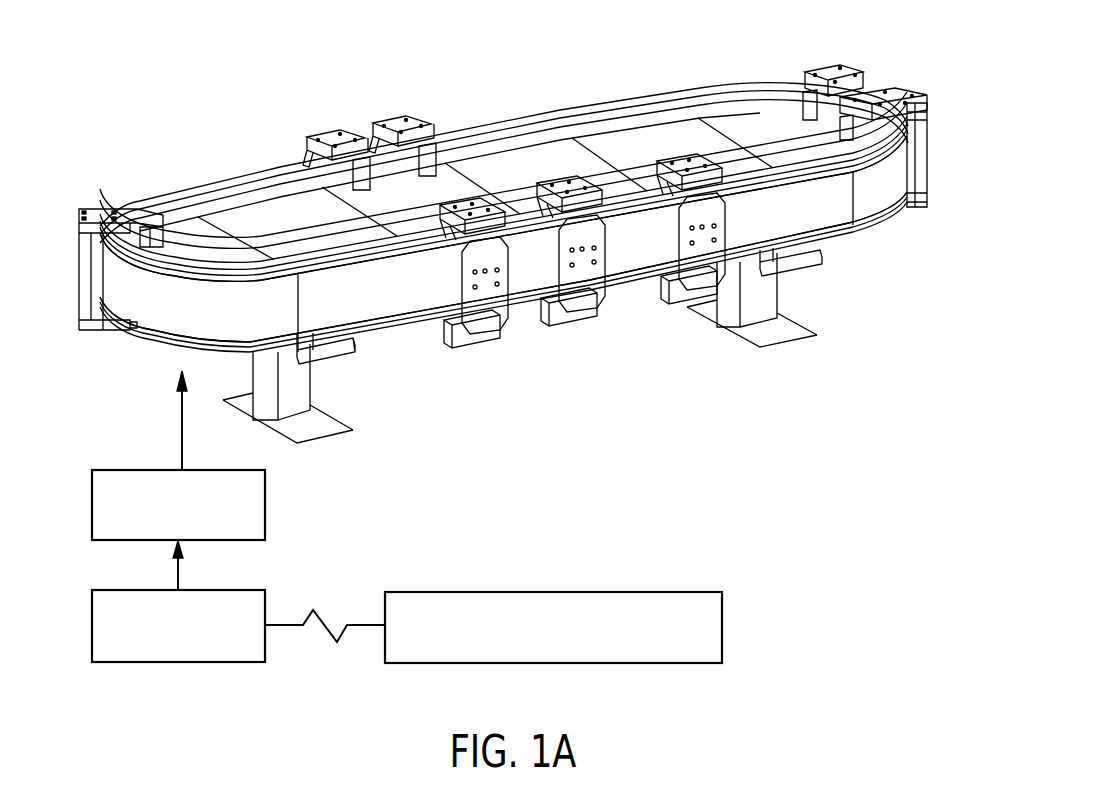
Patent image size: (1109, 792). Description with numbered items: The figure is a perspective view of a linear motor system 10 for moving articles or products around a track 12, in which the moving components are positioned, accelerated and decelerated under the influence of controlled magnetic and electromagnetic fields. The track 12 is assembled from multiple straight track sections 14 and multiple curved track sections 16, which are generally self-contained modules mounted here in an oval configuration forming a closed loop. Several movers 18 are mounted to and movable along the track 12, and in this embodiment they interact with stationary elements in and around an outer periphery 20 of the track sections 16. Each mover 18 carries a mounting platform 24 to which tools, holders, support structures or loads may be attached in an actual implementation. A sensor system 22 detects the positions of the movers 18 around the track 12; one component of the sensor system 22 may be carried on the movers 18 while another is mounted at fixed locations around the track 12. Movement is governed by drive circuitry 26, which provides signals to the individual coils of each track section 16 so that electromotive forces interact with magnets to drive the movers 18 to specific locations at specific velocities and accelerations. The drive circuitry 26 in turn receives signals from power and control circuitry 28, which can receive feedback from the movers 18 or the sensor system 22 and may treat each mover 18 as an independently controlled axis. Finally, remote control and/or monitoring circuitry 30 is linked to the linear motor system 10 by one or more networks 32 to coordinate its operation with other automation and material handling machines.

The linear motor system 10 is at (848, 35).
The track 12 is at (237, 307).
The straight track sections 14 is at (432, 283).
The curved track sections 16 is at (160, 312).
The movers 18 is at (397, 132).
The outer periphery 20 is at (353, 302).
The sensor system 22 is at (795, 103).
The mounting platform 24 is at (497, 321).
The drive circuitry 26 is at (265, 503).
The power and control circuitry 28 is at (267, 607).
The remote control and/or monitoring circuitry 30 is at (722, 627).
The networks 32 is at (367, 630).